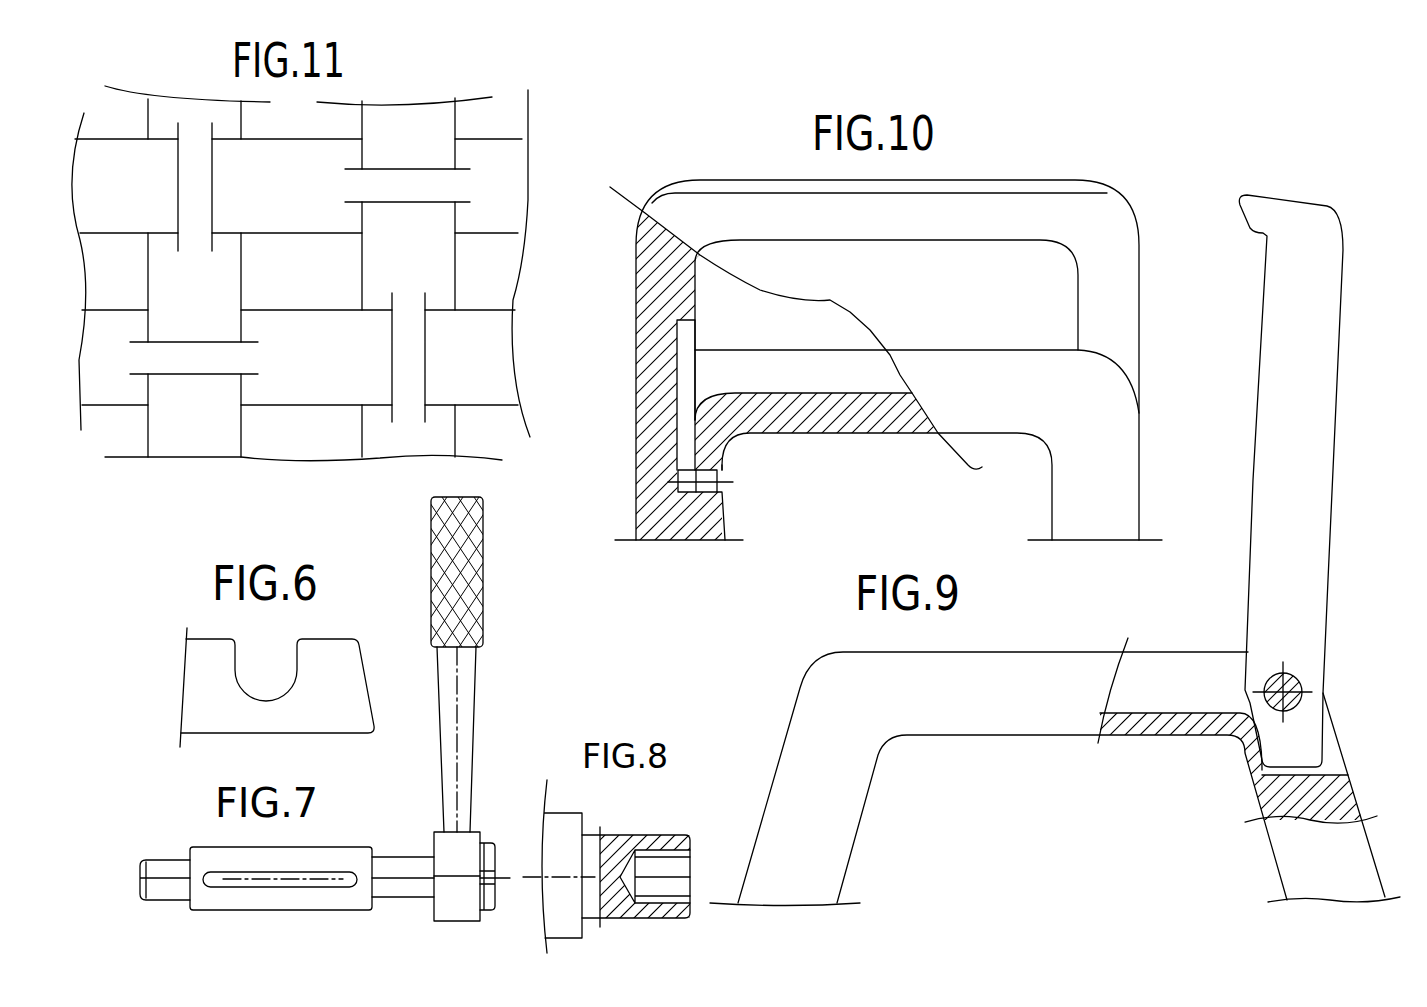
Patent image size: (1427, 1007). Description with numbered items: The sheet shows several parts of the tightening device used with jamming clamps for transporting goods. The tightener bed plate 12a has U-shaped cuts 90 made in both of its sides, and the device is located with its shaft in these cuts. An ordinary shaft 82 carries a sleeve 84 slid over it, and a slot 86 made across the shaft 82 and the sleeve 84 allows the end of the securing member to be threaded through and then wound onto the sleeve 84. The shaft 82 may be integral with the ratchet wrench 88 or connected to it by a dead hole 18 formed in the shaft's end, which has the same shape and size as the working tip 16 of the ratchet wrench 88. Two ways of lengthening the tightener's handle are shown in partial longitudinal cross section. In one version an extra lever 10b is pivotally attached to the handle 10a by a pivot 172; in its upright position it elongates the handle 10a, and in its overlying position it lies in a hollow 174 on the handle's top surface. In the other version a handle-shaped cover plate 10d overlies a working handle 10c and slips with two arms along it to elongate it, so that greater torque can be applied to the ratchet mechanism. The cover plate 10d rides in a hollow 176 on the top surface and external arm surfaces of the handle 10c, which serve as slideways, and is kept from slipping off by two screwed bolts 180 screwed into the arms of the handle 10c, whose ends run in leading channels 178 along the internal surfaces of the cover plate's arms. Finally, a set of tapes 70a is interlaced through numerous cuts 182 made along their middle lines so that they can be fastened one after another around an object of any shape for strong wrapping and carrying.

In FIG. 11, the tapes 70a is at (417, 132).
In FIG. 11, the cuts 182 is at (439, 182).
In FIG. 9, the handle 10a is at (813, 783).
In FIG. 10, the extra lever 10b is at (1290, 512).
In FIG. 10, the working handle 10c is at (1100, 418).
In FIG. 10, the cover plate 10d is at (1110, 257).
In FIG. 10, the hollow 176 is at (843, 369).
In FIG. 10, the leading channels 178 is at (687, 378).
In FIG. 10, the screwed bolts 180 is at (677, 492).
In FIG. 9, the hollow 174 is at (1148, 680).
In FIG. 9, the pivot 172 is at (1277, 682).
In FIG. 6, the tightener bed plate 12a is at (345, 707).
In FIG. 6, the U-shaped cuts 90 is at (263, 668).
In FIG. 7, the shaft 82 is at (162, 868).
In FIG. 7, the sleeve 84 is at (223, 895).
In FIG. 8, the sleeve 84 is at (607, 857).
In FIG. 7, the slot 86 is at (315, 880).
In FIG. 7, the ratchet wrench 88 is at (465, 665).
In FIG. 8, the dead hole 18 is at (627, 870).
In FIG. 8, the working tip 16 is at (673, 860).